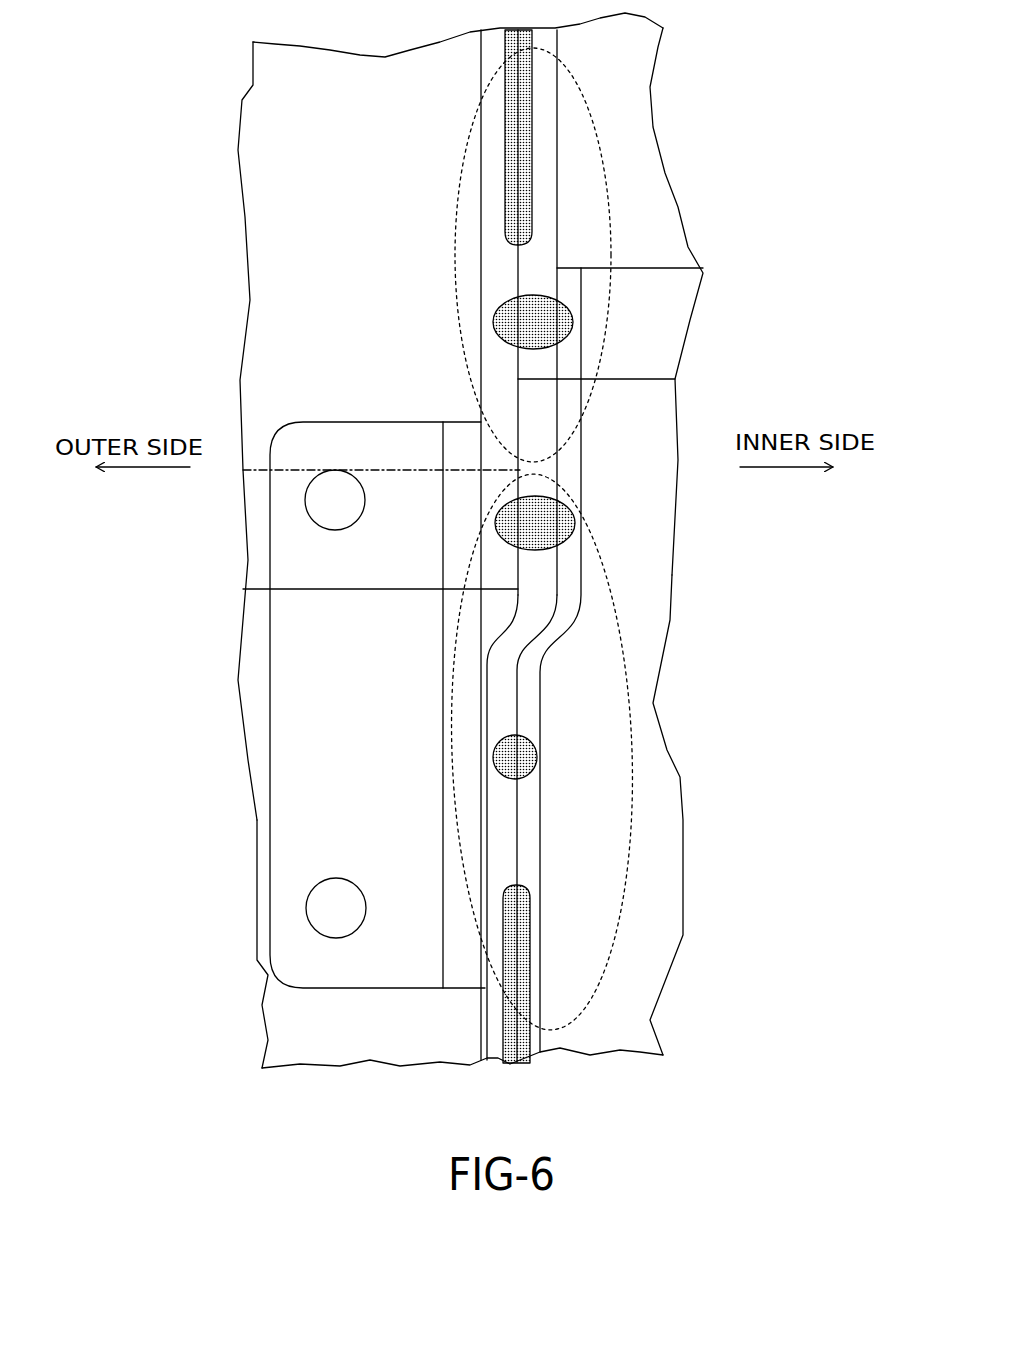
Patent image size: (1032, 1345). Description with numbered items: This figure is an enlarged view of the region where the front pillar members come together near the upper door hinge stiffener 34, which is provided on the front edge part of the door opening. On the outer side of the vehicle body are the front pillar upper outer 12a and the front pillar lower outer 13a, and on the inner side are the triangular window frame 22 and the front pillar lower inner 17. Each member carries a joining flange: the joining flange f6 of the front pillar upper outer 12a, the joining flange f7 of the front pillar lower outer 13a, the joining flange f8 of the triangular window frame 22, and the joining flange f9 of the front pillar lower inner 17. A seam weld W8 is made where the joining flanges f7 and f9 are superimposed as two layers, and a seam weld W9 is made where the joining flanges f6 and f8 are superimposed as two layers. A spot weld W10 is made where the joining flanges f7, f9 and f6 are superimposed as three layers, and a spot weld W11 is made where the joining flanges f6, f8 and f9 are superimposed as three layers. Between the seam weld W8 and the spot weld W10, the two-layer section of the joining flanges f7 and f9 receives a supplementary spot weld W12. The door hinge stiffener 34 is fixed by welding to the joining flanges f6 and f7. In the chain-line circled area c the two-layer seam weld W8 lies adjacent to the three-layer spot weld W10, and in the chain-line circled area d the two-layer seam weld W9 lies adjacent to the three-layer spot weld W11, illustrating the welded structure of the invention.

The front pillar upper outer 12a is at (230, 217).
The front pillar lower outer 13a is at (246, 908).
The triangular window frame 22 is at (667, 112).
The front pillar lower inner 17 is at (692, 790).
The door hinge stiffener 34 is at (368, 438).
The joining flange f6 is at (497, 160).
The joining flange f7 is at (498, 870).
The joining flange f8 is at (543, 128).
The joining flange f9 is at (533, 855).
The seam weld W8 is at (523, 960).
The seam weld W9 is at (523, 213).
The spot weld W10 is at (583, 517).
The spot weld W11 is at (565, 325).
The supplementary spot weld W12 is at (527, 760).
The area d is at (612, 198).
The area c is at (625, 712).